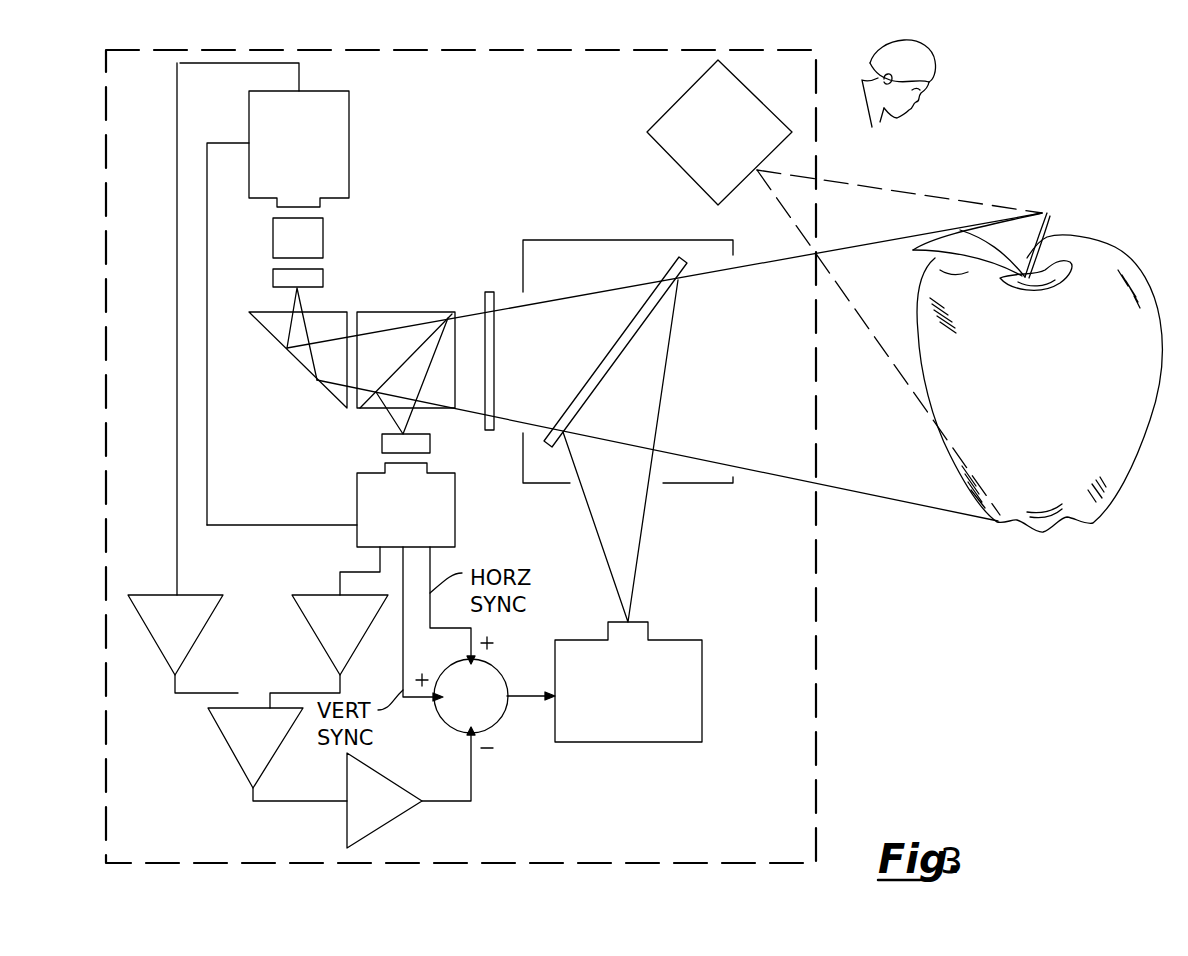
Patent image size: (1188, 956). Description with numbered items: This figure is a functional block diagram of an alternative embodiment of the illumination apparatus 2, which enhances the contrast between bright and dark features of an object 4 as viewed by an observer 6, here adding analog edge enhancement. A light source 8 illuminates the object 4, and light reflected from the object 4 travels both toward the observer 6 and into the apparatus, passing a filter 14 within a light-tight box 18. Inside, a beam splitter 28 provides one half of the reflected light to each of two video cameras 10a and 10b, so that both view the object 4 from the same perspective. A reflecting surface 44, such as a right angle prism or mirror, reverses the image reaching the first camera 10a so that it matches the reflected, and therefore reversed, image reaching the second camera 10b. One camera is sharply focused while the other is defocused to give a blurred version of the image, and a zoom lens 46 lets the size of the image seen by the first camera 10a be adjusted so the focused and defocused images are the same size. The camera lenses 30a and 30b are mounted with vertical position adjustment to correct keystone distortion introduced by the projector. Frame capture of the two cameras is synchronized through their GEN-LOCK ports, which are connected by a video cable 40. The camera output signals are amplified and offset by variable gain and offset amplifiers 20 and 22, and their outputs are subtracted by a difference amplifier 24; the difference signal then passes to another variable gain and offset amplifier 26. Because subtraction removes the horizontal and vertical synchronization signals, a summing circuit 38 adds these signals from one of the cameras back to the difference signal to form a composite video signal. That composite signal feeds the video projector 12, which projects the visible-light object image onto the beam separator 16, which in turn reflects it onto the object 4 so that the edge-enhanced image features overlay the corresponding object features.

The illumination apparatus 2 is at (106, 123).
The object 4 is at (1133, 263).
The observer 6 is at (872, 68).
The light source 8 is at (753, 103).
The first video camera 10a is at (349, 136).
The second video camera 10b is at (455, 528).
The video projector 12 is at (702, 660).
The filter 14 is at (488, 290).
The beam separator 16 is at (543, 446).
The light-tight box 18 is at (568, 240).
The variable gain and offset amplifier 20 is at (162, 655).
The variable gain and offset amplifier 22 is at (322, 652).
The difference amplifier 24 is at (232, 757).
The variable gain and offset amplifier 26 is at (347, 827).
The beam splitter 28 is at (413, 310).
The video camera lens 30a is at (323, 279).
The video camera lens 30b is at (382, 443).
The summing circuit 38 is at (502, 677).
The video cable 40 is at (288, 525).
The reflecting surface 44 is at (270, 333).
The zoom lens 46 is at (323, 243).